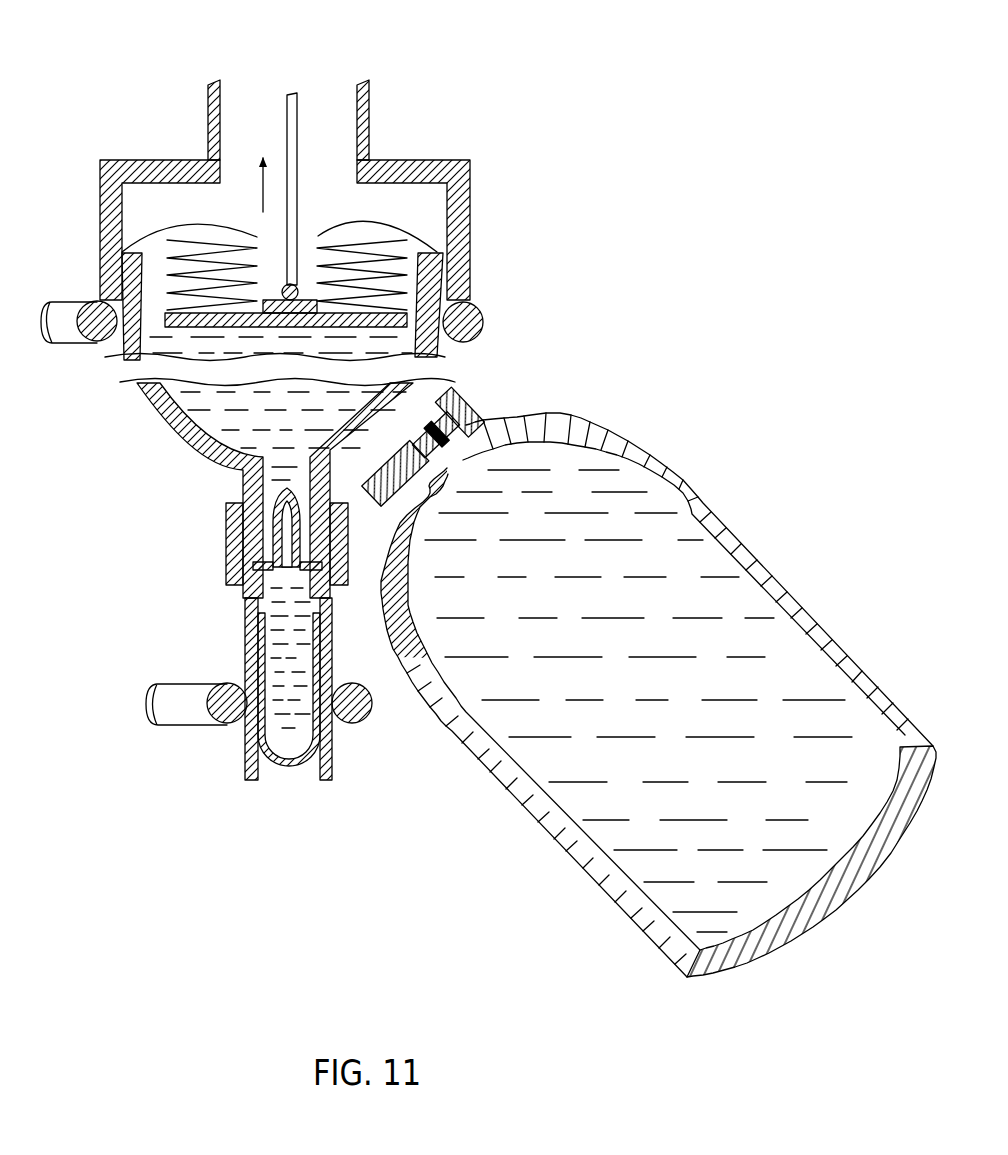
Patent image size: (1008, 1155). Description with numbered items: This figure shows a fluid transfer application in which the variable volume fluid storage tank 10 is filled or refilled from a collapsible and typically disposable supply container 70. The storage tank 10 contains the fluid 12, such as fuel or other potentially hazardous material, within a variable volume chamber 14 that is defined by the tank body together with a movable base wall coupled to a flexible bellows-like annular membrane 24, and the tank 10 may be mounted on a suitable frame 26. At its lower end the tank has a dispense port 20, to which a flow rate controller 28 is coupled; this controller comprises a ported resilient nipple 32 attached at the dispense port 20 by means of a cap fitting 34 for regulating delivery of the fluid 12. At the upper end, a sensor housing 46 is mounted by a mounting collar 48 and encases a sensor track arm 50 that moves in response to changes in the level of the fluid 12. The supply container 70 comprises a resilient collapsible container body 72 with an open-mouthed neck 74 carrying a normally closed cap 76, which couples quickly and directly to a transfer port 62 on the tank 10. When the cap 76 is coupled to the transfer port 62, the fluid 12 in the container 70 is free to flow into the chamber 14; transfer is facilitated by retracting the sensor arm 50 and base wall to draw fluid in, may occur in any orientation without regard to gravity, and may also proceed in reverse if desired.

The fluid storage tank 10 is at (490, 221).
The fluid 12 is at (187, 402).
The variable volume chamber 14 is at (215, 420).
The dispense port 20 is at (243, 483).
The annular membrane 24 is at (375, 230).
The frame 26 is at (488, 312).
The flow rate controller 28 is at (229, 655).
The ported resilient nipple 32 is at (334, 668).
The cap fitting 34 is at (227, 568).
The sensor housing 46 is at (371, 118).
The mounting collar 48 is at (98, 185).
The sensor track arm 50 is at (296, 183).
The transfer port 62 is at (438, 400).
The supply container 70 is at (658, 683).
The collapsible container body 72 is at (552, 838).
The neck 74 is at (485, 422).
The cap 76 is at (464, 406).